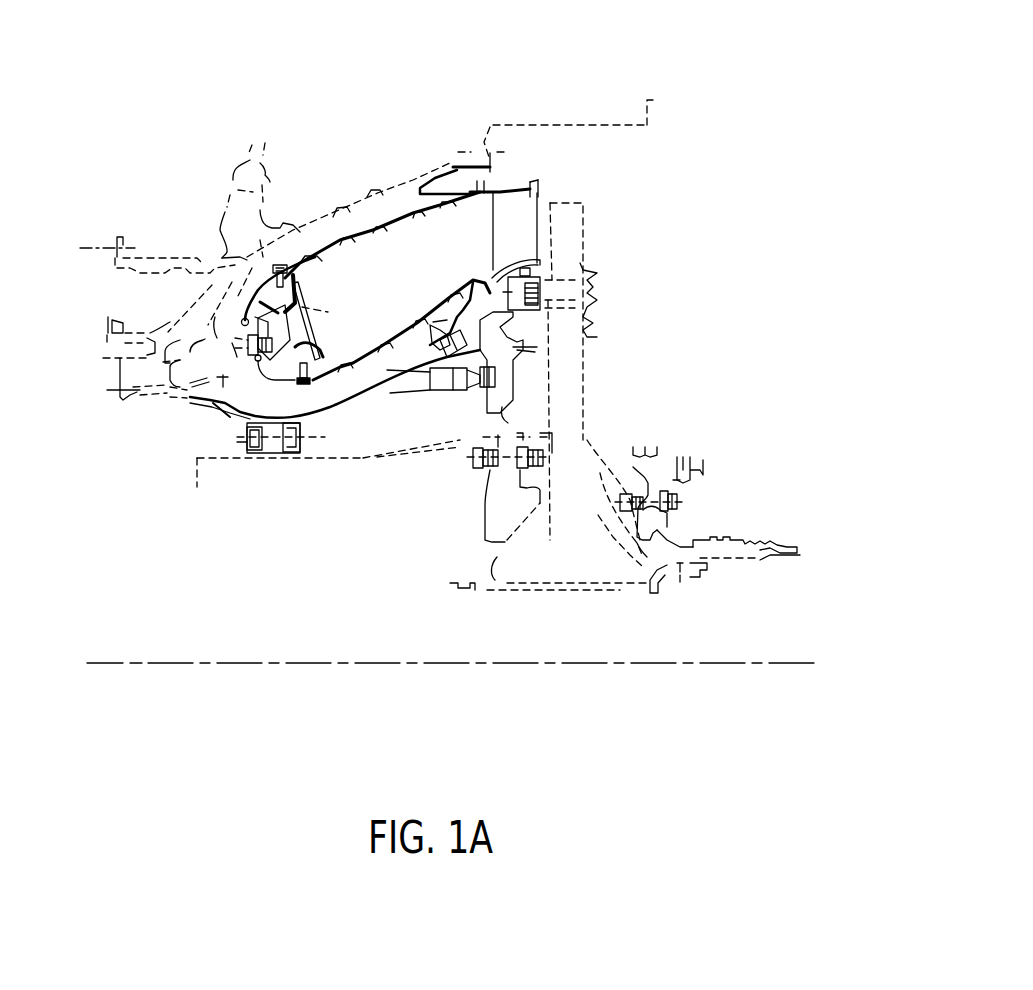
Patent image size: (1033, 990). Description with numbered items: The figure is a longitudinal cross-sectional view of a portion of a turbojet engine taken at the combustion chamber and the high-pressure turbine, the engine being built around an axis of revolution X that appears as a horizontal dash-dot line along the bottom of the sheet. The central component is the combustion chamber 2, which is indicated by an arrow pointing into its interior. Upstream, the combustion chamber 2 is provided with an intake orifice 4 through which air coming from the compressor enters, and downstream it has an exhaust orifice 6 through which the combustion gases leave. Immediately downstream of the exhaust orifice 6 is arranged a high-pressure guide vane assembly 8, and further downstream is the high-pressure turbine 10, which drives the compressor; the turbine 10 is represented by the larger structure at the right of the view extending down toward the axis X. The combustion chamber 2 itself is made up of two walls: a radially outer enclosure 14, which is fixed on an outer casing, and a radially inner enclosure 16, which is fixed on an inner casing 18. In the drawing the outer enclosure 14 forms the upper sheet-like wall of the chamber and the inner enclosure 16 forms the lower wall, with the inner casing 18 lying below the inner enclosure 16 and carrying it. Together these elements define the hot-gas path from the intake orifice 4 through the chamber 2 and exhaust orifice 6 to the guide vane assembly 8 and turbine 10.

The combustion chamber 2 is at (392, 265).
The intake orifice 4 is at (315, 300).
The exhaust orifice 6 is at (488, 227).
The high-pressure guide vane assembly 8 is at (525, 212).
The high-pressure turbine 10 is at (572, 418).
The radially outer enclosure 14 is at (411, 225).
The radially inner enclosure 16 is at (370, 357).
The inner casing 18 is at (333, 413).
The axis of revolution X is at (165, 665).